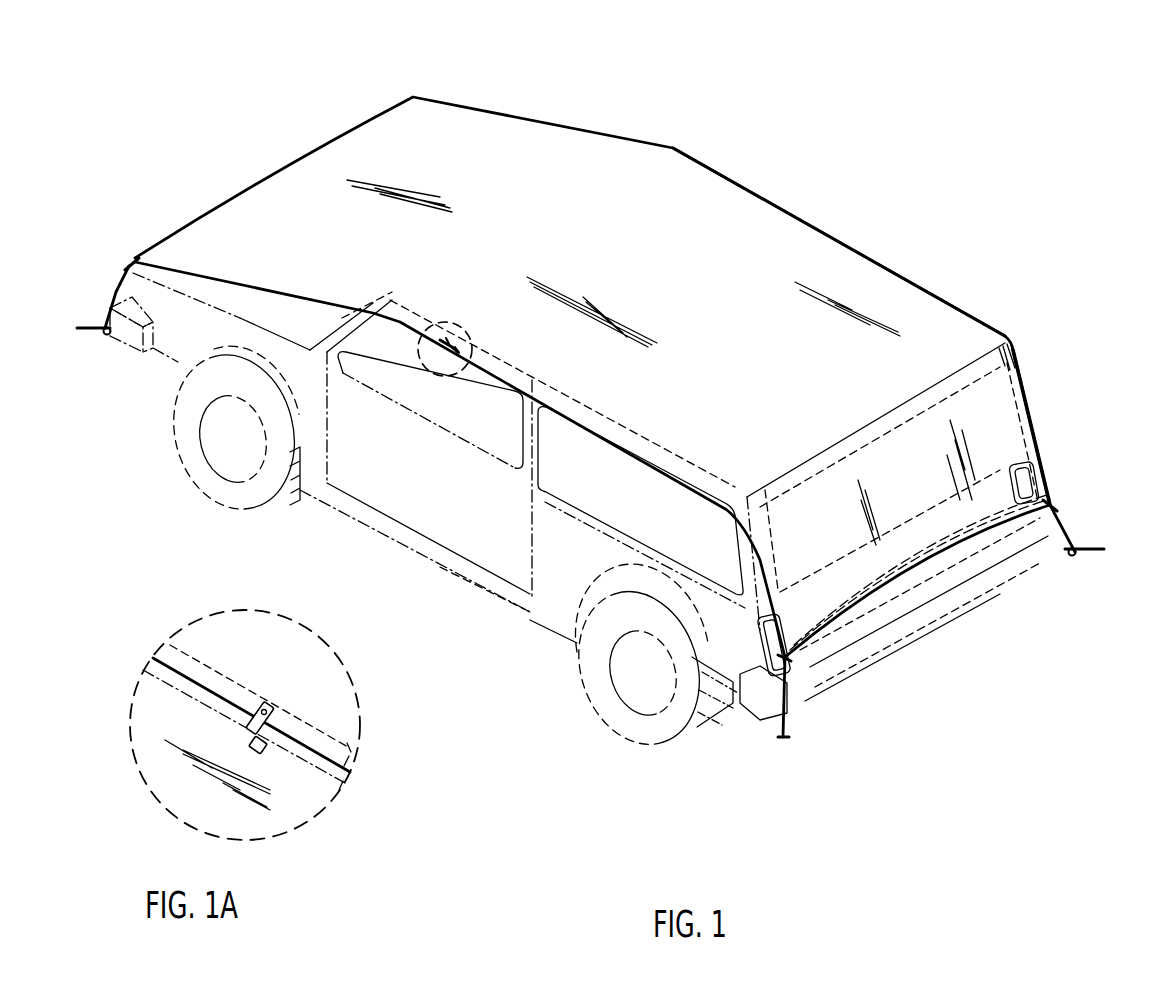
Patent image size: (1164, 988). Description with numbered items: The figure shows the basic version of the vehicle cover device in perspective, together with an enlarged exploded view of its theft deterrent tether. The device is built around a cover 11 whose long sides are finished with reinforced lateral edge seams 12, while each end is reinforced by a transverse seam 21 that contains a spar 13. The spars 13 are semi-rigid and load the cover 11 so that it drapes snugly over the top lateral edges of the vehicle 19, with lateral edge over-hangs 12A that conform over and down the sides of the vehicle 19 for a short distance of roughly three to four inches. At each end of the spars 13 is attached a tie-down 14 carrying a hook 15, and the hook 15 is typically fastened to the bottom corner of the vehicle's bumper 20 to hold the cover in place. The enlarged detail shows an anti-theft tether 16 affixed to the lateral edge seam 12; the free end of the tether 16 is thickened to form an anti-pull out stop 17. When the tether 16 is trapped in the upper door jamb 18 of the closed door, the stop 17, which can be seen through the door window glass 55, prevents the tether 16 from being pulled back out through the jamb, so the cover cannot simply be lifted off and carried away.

In FIG. 1, the cover 11 is at (742, 270).
In FIG. 1, the reinforced lateral edge seam 12 is at (897, 268).
In FIG. 1A, the reinforced lateral edge seam 12 is at (321, 742).
In FIG. 1, the lateral edge over-hang 12A is at (568, 410).
In FIG. 1A, the lateral edge over-hang 12A is at (236, 649).
In FIG. 1, the spar 13 is at (118, 272).
In FIG. 1, the tie-down 14 is at (1079, 533).
In FIG. 1, the hook 15 is at (105, 345).
In FIG. 1, the anti-theft tether 16 is at (413, 297).
In FIG. 1A, the anti-theft tether 16 is at (274, 699).
In FIG. 1A, the anti-pull out stop 17 is at (250, 751).
In FIG. 1A, the upper door jamb 18 is at (164, 682).
In FIG. 1, the vehicle 19 is at (529, 620).
In FIG. 1, the bumper 20 is at (902, 648).
In FIG. 1, the transverse seam 21 is at (978, 519).
In FIG. 1A, the door window glass 55 is at (158, 709).